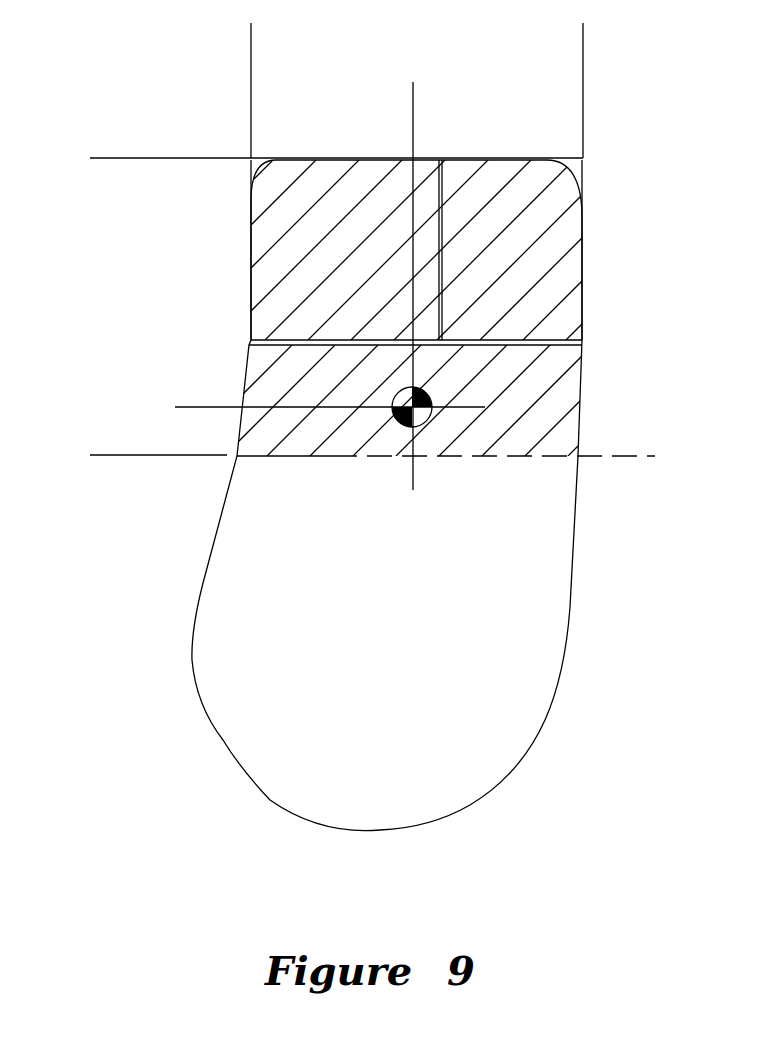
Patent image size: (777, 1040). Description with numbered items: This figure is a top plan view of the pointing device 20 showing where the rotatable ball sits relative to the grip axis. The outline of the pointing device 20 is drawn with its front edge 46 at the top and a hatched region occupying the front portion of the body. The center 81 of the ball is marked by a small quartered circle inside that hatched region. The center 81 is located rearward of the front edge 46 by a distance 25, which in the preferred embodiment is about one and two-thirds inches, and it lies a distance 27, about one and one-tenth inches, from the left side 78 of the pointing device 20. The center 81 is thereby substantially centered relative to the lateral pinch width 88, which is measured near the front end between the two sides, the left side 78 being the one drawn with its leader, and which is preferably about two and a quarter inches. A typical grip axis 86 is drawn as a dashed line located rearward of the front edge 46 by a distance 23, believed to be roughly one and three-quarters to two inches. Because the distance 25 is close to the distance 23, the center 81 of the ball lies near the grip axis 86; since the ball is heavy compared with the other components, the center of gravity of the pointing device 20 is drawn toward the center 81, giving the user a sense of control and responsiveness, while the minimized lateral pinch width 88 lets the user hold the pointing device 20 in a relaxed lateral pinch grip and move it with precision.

The pointing device 20 is at (170, 572).
The distance 23 is at (103, 158).
The distance 25 is at (188, 158).
The distance 27 is at (413, 92).
The front edge 46 is at (497, 160).
The left side 78 is at (250, 203).
The center of the ball 81 is at (419, 417).
The grip axis 86 is at (632, 455).
The lateral pinch width 88 is at (251, 33).